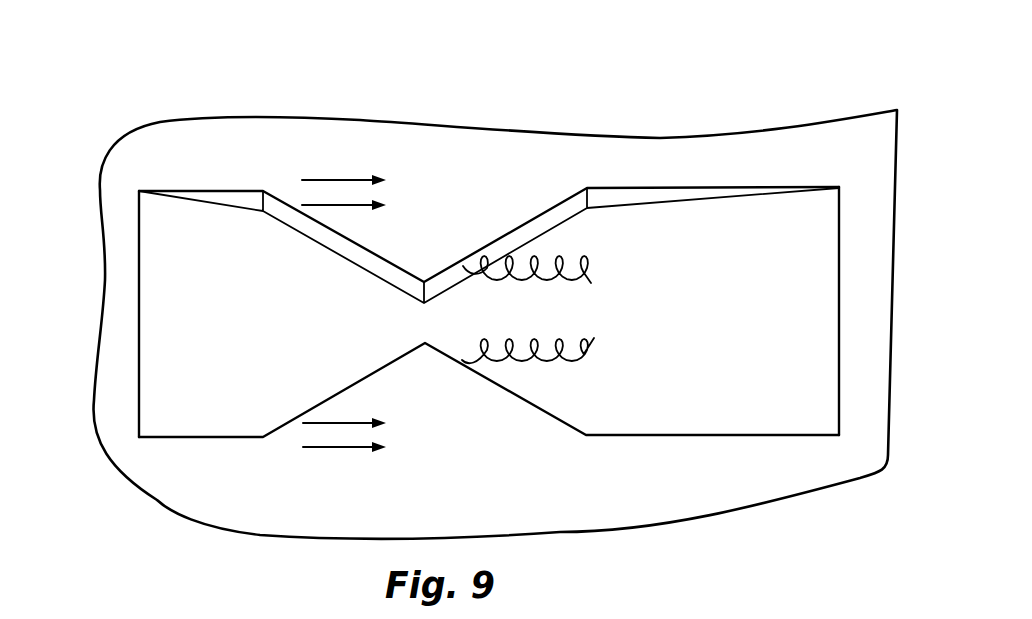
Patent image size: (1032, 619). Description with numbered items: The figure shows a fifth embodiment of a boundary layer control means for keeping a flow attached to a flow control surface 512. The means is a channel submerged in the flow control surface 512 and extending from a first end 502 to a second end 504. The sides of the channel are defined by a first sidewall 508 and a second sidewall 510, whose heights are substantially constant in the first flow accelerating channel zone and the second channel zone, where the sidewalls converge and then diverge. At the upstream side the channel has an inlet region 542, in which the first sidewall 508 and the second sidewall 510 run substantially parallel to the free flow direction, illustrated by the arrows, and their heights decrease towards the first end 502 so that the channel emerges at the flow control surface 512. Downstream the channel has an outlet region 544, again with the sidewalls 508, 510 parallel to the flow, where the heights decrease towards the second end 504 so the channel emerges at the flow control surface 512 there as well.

The first end 502 is at (139, 349).
The second end 504 is at (840, 360).
The first sidewall 508 is at (623, 193).
The second sidewall 510 is at (634, 427).
The flow control surface 512 is at (460, 150).
The inlet region 542 is at (203, 397).
The outlet region 544 is at (735, 397).